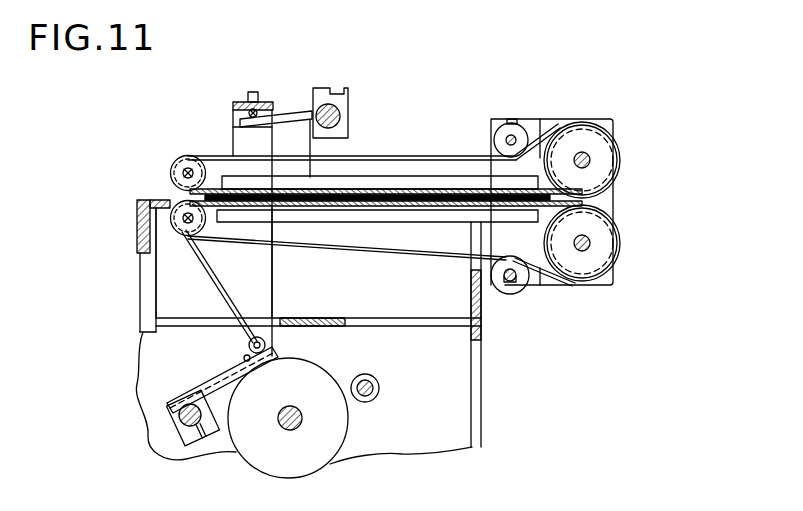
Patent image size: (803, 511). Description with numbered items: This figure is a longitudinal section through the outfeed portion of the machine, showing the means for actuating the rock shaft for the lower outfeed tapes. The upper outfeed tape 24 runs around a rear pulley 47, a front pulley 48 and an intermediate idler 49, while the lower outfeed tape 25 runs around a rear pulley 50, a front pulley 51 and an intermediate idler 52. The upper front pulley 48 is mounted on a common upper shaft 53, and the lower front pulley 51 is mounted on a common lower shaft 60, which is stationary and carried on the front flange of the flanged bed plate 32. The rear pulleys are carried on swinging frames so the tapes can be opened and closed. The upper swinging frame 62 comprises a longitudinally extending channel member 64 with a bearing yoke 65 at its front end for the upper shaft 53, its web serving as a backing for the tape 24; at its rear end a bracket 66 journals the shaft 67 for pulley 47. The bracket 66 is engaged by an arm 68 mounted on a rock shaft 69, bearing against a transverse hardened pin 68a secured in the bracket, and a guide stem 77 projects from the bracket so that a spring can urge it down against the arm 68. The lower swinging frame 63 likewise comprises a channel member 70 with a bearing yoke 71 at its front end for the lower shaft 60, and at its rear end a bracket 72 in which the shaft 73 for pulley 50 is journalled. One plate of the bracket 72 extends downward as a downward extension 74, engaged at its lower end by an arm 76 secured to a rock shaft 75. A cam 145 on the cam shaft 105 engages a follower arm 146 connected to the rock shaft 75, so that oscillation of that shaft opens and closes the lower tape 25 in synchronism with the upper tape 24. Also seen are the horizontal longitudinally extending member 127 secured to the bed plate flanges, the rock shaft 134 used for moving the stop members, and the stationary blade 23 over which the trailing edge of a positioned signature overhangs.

The stationary blade 23 is at (137, 222).
The upper outfeed tape 24 is at (412, 160).
The lower outfeed tape 25 is at (392, 254).
The flanged bed plate 32 is at (158, 200).
The pulley 47 is at (180, 163).
The pulley 48 is at (600, 145).
The idler 49 is at (514, 136).
The pulley 50 is at (202, 236).
The pulley 51 is at (598, 226).
The idler 52 is at (506, 294).
The upper shaft 53 is at (590, 160).
The lower shaft 60 is at (590, 243).
The swinging frame 62 is at (462, 176).
The swinging frame 63 is at (344, 222).
The channel member 64 is at (396, 188).
The bearing yoke 65 is at (494, 119).
The bracket 66 is at (242, 143).
The shaft 67 is at (184, 170).
The arm 68 is at (275, 118).
The transverse hardened pin 68a is at (233, 104).
The rock shaft 69 is at (348, 112).
The channel member 70 is at (417, 220).
The bearing yoke 71 is at (548, 288).
The bracket 72 is at (262, 278).
The shaft 73 is at (194, 221).
The downward extension 74 is at (234, 316).
The rock shaft 75 is at (184, 428).
The arm 76 is at (268, 350).
The guide stem 77 is at (255, 92).
The cam shaft 105 is at (300, 398).
The longitudinally extending member 127 is at (404, 306).
The rock shaft 134 is at (380, 392).
The cam 145 is at (304, 476).
The follower arm 146 is at (212, 370).